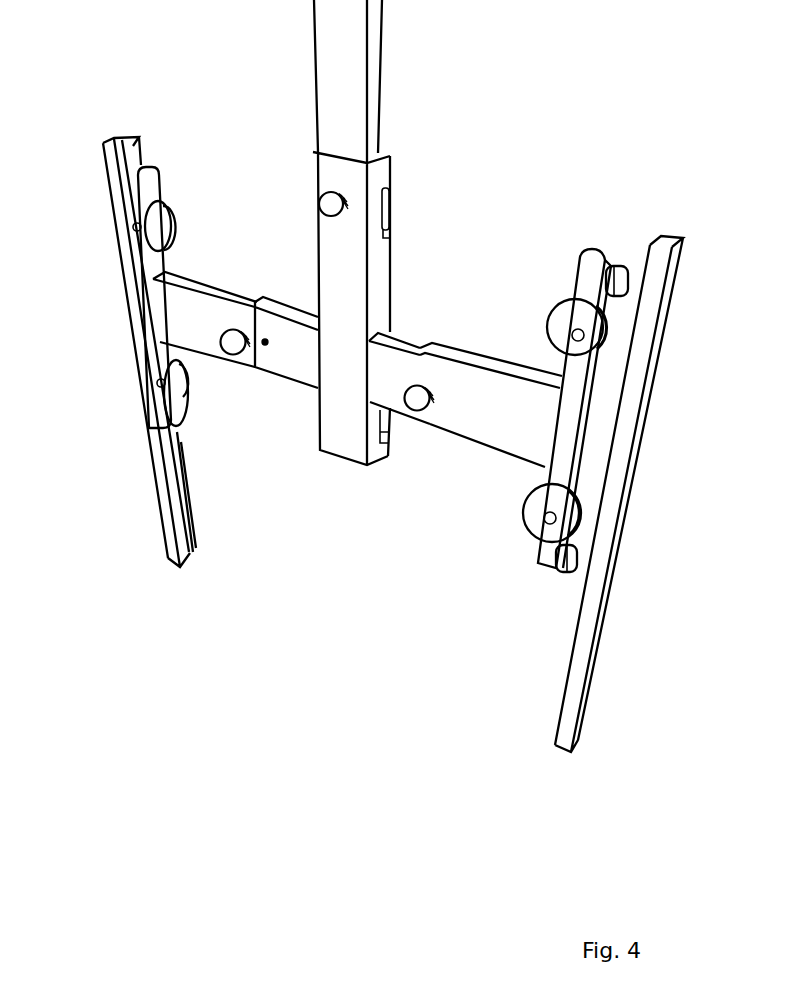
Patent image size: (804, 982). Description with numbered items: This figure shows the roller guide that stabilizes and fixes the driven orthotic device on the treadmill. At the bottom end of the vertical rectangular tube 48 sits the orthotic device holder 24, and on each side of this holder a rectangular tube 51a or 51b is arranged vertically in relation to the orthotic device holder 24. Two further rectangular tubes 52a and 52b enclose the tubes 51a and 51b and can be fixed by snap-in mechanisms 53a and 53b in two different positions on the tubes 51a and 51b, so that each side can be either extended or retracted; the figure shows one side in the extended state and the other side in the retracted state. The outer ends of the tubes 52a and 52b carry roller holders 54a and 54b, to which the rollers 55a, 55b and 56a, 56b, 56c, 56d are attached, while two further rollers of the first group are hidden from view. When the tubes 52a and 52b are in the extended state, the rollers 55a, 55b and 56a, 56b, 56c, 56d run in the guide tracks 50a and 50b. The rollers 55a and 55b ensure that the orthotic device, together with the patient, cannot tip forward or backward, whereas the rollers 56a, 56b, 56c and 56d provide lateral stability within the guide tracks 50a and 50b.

The orthotic device holder 24 is at (343, 442).
The rectangular tube 48 is at (350, 44).
The guide track 50a is at (565, 732).
The guide track 50b is at (168, 540).
The rectangular tube 51a is at (394, 355).
The rectangular tube 51b is at (288, 325).
The rectangular tube 52a is at (460, 371).
The rectangular tube 52b is at (207, 307).
The snap-in mechanism 53a is at (418, 405).
The snap-in mechanism 53b is at (234, 352).
The roller holder 54a is at (562, 452).
The roller holder 54b is at (145, 273).
The roller 55a is at (617, 273).
The roller 55b is at (567, 565).
The roller 56a is at (562, 312).
The roller 56b is at (533, 520).
The roller 56c is at (160, 218).
The roller 56d is at (184, 414).